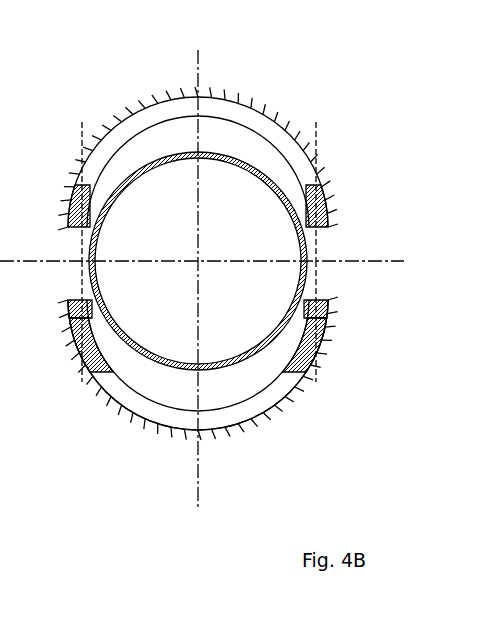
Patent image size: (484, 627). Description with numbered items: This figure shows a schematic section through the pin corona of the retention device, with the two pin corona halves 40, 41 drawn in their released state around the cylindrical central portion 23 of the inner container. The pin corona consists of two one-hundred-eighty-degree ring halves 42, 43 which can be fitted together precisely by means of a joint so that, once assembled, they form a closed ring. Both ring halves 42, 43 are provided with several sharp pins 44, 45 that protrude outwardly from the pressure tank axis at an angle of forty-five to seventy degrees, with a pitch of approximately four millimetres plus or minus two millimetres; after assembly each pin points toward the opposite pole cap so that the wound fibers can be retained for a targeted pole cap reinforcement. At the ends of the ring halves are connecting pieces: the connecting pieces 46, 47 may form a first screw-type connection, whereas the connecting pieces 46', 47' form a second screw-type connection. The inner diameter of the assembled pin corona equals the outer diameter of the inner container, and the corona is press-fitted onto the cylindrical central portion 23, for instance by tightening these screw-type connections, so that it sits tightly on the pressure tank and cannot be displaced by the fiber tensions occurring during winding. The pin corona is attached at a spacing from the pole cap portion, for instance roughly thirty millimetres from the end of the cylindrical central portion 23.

The cylindrical central portion 23 is at (252, 168).
The pin corona half 40 is at (121, 84).
The pin corona half 41 is at (288, 429).
The ring half 42 is at (171, 113).
The ring half 43 is at (181, 412).
The sharp pins 44 is at (268, 107).
The sharp pins 45 is at (104, 398).
The connecting piece 46 is at (342, 191).
The connecting piece 46' is at (55, 191).
The connecting piece 47 is at (330, 321).
The connecting piece 47' is at (71, 321).